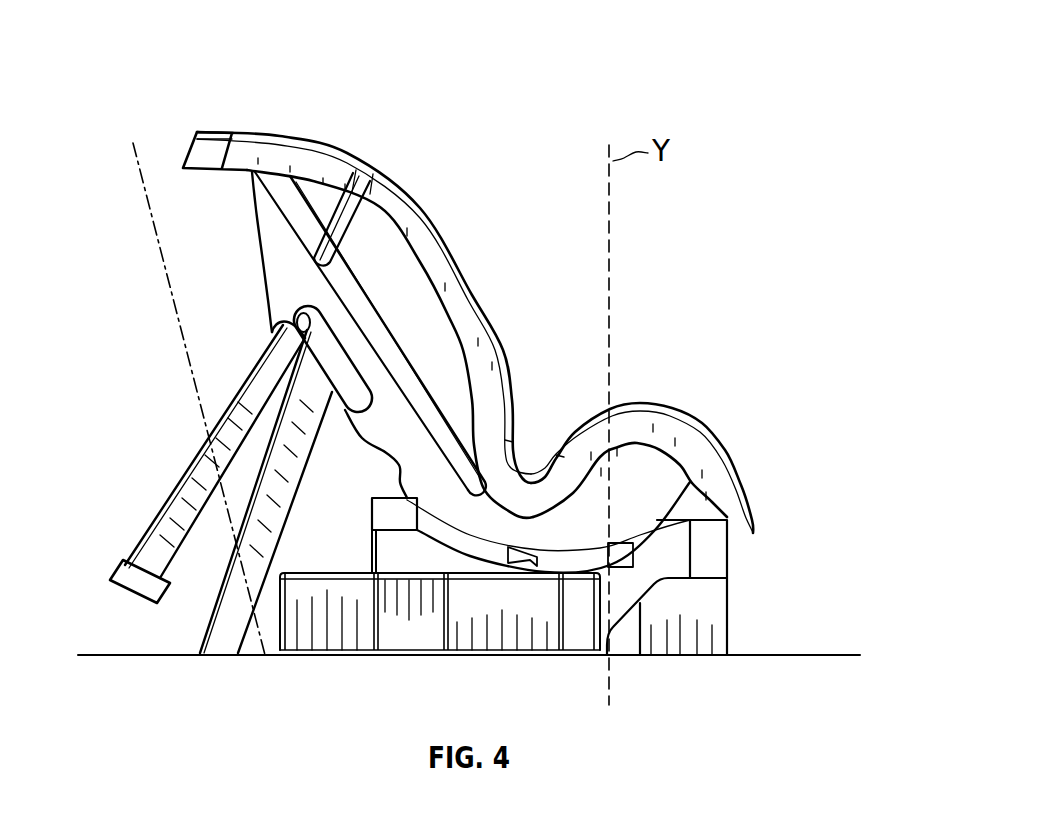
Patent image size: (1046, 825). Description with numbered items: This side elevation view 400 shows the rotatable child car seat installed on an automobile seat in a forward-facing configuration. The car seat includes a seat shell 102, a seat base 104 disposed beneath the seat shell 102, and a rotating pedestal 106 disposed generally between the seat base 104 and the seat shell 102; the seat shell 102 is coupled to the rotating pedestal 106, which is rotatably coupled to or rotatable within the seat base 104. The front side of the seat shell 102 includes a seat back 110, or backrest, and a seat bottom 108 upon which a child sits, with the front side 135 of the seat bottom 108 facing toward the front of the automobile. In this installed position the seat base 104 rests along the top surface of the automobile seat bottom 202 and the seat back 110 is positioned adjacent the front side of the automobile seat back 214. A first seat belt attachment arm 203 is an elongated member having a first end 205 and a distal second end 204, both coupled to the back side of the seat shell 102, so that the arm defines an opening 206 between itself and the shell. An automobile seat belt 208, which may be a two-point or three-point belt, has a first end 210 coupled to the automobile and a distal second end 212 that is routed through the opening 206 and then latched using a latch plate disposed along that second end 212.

The side elevation view 400 is at (797, 38).
The seat shell 102 is at (212, 130).
The seat base 104 is at (688, 642).
The rotating pedestal 106 is at (376, 553).
The seat bottom 108 is at (684, 498).
The seat back 110 is at (345, 298).
The front side of the seat bottom 135 is at (673, 400).
The automobile seat bottom 202 is at (823, 652).
The first seat belt attachment arm 203 is at (270, 258).
The distal second end 204 is at (256, 218).
The first end 205 is at (411, 372).
The opening 206 is at (265, 338).
The automobile seat belt 208 is at (287, 463).
The first end of the seat belt 210 is at (230, 640).
The distal second end of the seat belt 212 is at (120, 568).
The automobile seat back 214 is at (135, 168).